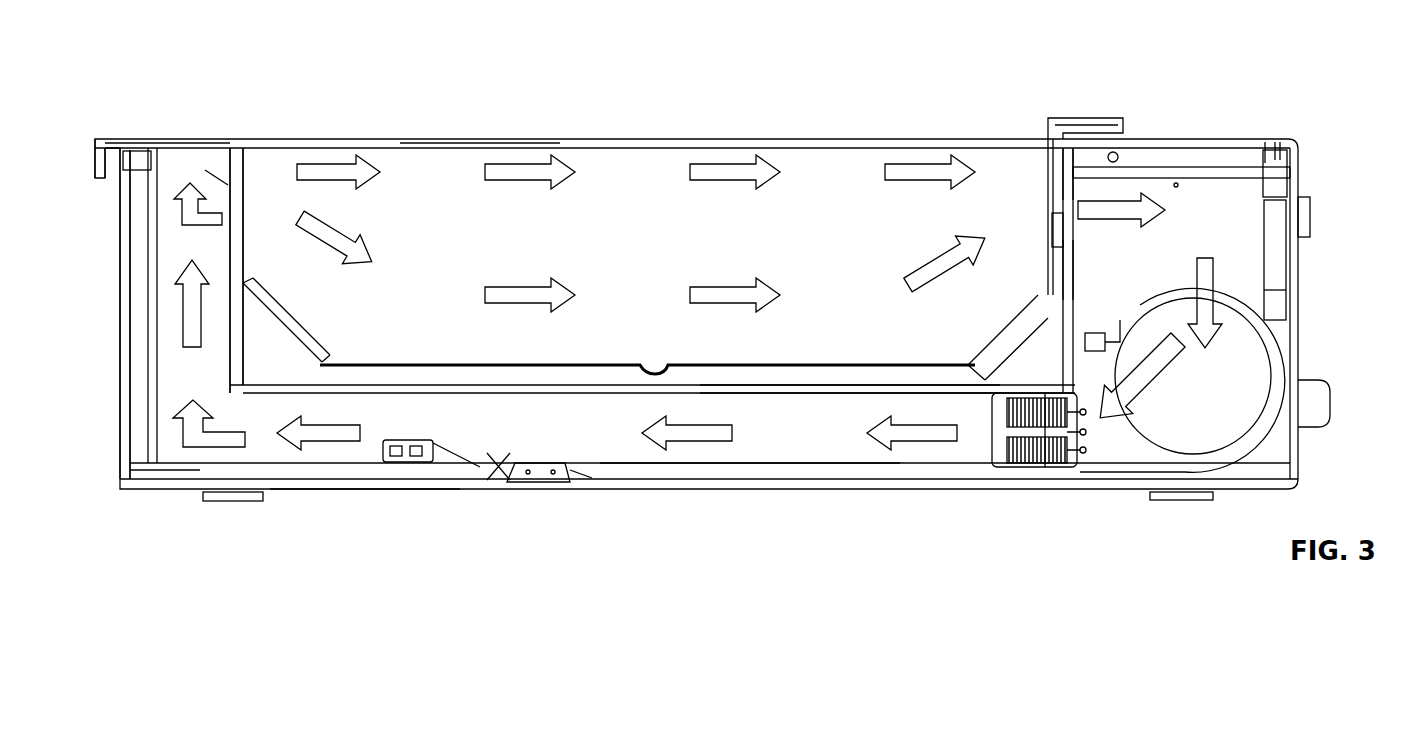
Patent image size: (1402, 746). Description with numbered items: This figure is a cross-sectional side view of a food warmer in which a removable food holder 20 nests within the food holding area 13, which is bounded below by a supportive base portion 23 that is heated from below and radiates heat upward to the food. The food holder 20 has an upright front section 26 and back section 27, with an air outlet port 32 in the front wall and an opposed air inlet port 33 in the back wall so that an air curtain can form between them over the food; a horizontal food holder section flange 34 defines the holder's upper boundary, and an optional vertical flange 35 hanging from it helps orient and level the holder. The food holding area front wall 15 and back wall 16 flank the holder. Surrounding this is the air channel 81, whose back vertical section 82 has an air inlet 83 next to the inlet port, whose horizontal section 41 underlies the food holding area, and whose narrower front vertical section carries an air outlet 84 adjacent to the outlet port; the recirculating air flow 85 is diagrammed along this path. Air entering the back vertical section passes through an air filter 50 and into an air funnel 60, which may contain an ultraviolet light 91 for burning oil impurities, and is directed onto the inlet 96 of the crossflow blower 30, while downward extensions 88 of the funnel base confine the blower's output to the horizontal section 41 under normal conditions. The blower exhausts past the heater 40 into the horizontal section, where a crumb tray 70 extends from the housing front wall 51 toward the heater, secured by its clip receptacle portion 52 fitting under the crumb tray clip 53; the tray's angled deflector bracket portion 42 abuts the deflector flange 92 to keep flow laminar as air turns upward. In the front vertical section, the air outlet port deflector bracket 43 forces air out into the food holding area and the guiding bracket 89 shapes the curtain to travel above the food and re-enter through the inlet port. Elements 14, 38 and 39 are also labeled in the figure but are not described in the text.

The food holding area 13 is at (633, 216).
The return air passage 14 is at (763, 498).
The food holding area front wall 15 is at (241, 341).
The food holding area back wall 16 is at (1069, 313).
The food holder 20 is at (543, 361).
The supportive base portion 23 is at (872, 384).
The front section 26 is at (245, 263).
The back section 27 is at (1047, 258).
The blower 30 is at (1229, 372).
The air outlet port 32 is at (254, 173).
The air inlet port 33 is at (1042, 175).
The horizontal food holder section flange 34 is at (158, 131).
The vertical flange 35 is at (91, 158).
The tab 38 is at (1121, 117).
The opening 39 is at (1036, 220).
The heater 40 is at (1034, 428).
The horizontal section 41 is at (788, 431).
The deflector bracket portion 42 is at (161, 463).
The air outlet port deflector bracket 43 is at (166, 178).
The air filter 50 is at (1074, 174).
The front wall 51 is at (107, 333).
The crumb tray clip receptacle portion 52 is at (551, 474).
The crumb tray clip 53 is at (418, 453).
The air funnel 60 is at (1291, 168).
The crumb tray 70 is at (362, 491).
The air channel 81 is at (559, 439).
The back vertical section 82 is at (179, 383).
The air inlet 83 is at (1077, 187).
The air outlet 84 is at (221, 183).
The air flow 85 is at (476, 175).
The extensions 88 is at (1277, 323).
The guiding bracket 89 is at (221, 213).
The ultraviolet light 91 is at (1182, 193).
The deflector flange 92 is at (165, 443).
The inlet 96 is at (1218, 277).